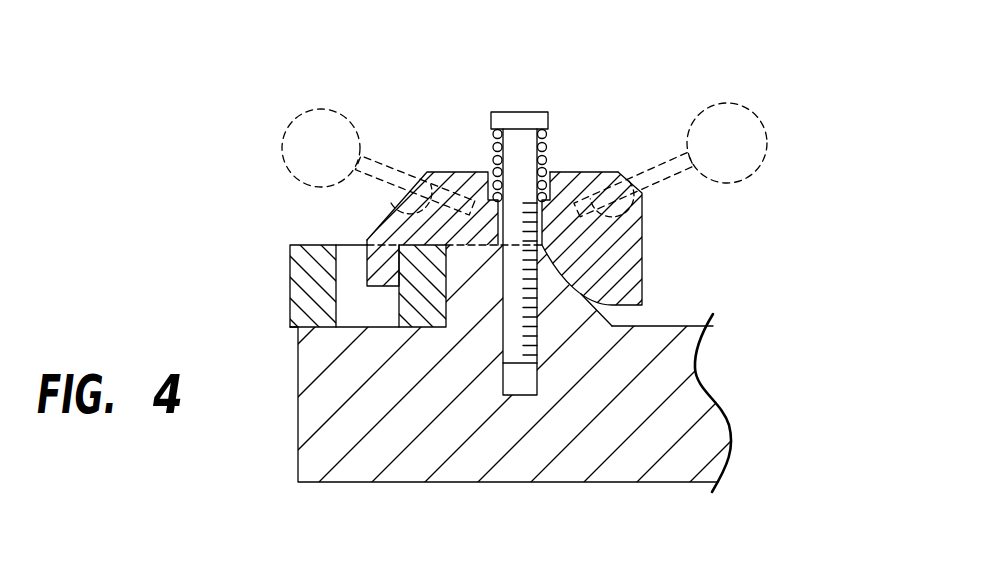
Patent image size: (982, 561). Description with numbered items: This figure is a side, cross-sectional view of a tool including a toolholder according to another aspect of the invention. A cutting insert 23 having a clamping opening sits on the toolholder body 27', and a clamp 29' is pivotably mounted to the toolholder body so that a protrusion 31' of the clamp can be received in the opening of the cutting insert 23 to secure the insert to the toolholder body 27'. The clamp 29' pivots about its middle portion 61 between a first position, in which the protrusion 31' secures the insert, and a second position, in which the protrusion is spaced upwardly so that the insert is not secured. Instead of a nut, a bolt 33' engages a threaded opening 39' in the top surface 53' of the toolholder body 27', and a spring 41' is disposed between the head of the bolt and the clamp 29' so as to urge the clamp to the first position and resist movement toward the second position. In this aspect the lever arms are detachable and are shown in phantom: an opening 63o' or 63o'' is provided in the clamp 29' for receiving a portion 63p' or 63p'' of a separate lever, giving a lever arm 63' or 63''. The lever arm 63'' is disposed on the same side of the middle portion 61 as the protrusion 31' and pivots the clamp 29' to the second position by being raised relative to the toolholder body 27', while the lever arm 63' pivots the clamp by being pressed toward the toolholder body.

The cutting insert 23 is at (283, 265).
The toolholder body 27' is at (546, 366).
The clamp 29' is at (536, 238).
The protrusion 31' is at (349, 249).
The bolt 33' is at (507, 210).
The threaded opening 39' is at (497, 444).
The spring 41' is at (476, 142).
The top surface 53' is at (700, 310).
The middle portion 61 is at (582, 172).
The lever arm 63' is at (759, 122).
The lever arm 63'' is at (285, 120).
The portion of separate lever 63p' is at (634, 172).
The portion of separate lever 63p'' is at (414, 165).
The opening 63o' is at (649, 209).
The opening 63o'' is at (380, 199).